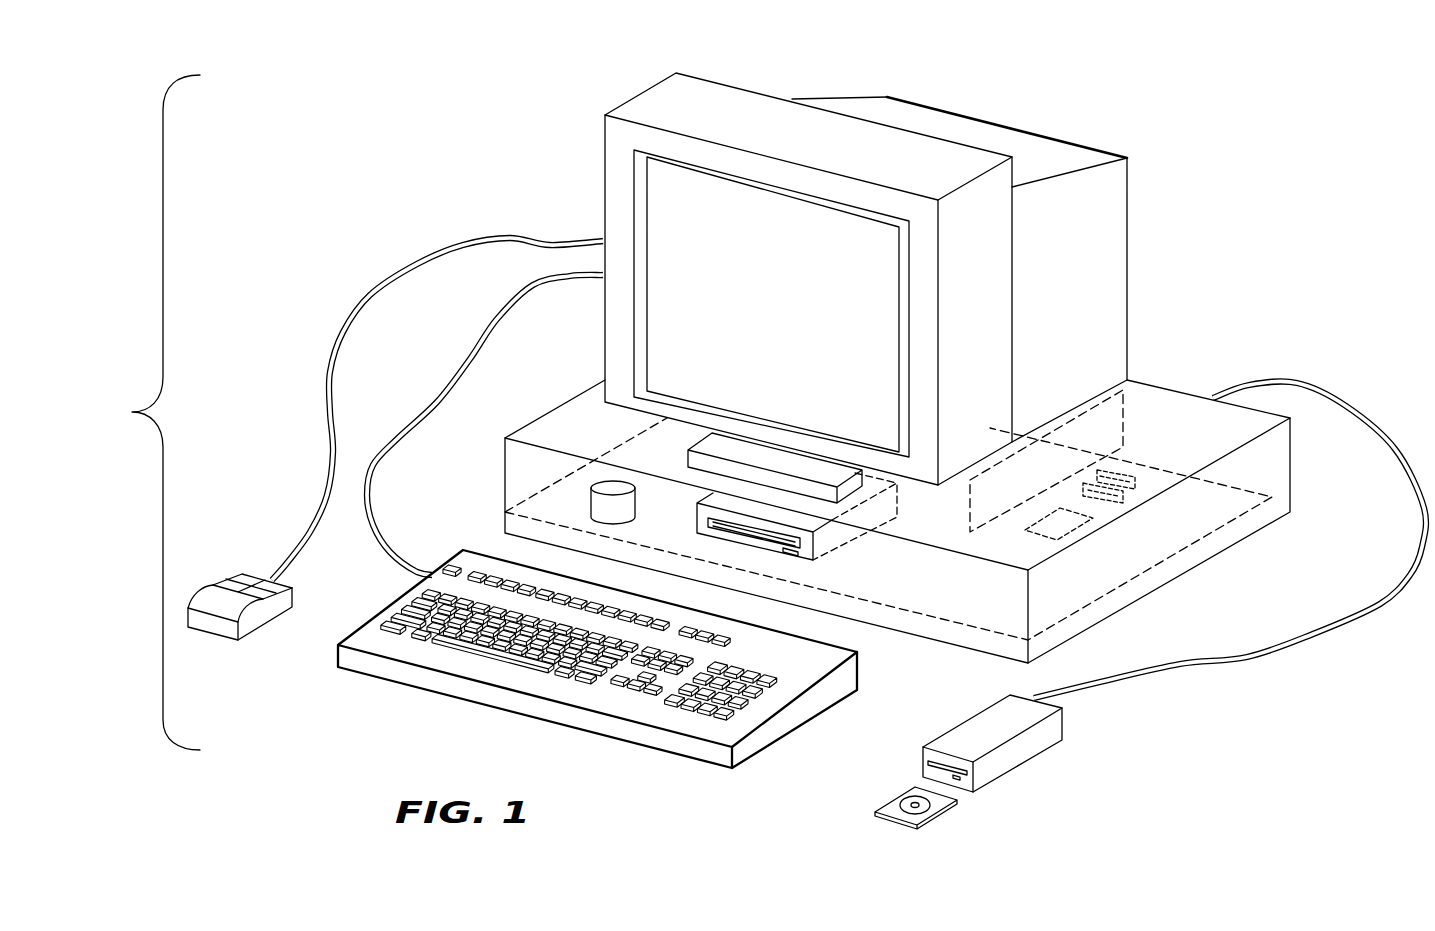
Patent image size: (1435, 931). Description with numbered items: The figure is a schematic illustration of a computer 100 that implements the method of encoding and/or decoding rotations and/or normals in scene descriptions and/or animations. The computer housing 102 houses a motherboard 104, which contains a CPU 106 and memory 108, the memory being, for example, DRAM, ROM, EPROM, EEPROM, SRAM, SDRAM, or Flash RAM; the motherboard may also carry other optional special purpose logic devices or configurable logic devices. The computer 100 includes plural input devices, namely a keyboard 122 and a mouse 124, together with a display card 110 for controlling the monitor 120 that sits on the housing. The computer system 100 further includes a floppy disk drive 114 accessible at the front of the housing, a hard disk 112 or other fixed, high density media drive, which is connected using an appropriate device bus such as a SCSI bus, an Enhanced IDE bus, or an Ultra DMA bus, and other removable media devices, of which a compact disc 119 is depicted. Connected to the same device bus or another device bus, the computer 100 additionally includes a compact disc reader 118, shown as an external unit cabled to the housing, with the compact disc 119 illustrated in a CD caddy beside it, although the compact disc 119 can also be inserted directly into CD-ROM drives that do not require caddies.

The computer 100 is at (132, 413).
The computer housing 102 is at (1170, 393).
The motherboard 104 is at (1247, 522).
The CPU 106 is at (1053, 525).
The memory 108 is at (1128, 492).
The display card 110 is at (1112, 392).
The hard disk 112 is at (605, 505).
The floppy disk drive 114 is at (808, 552).
The compact disc reader 118 is at (975, 725).
The compact disc 119 is at (927, 803).
The monitor 120 is at (958, 123).
The keyboard 122 is at (790, 713).
The mouse 124 is at (220, 585).